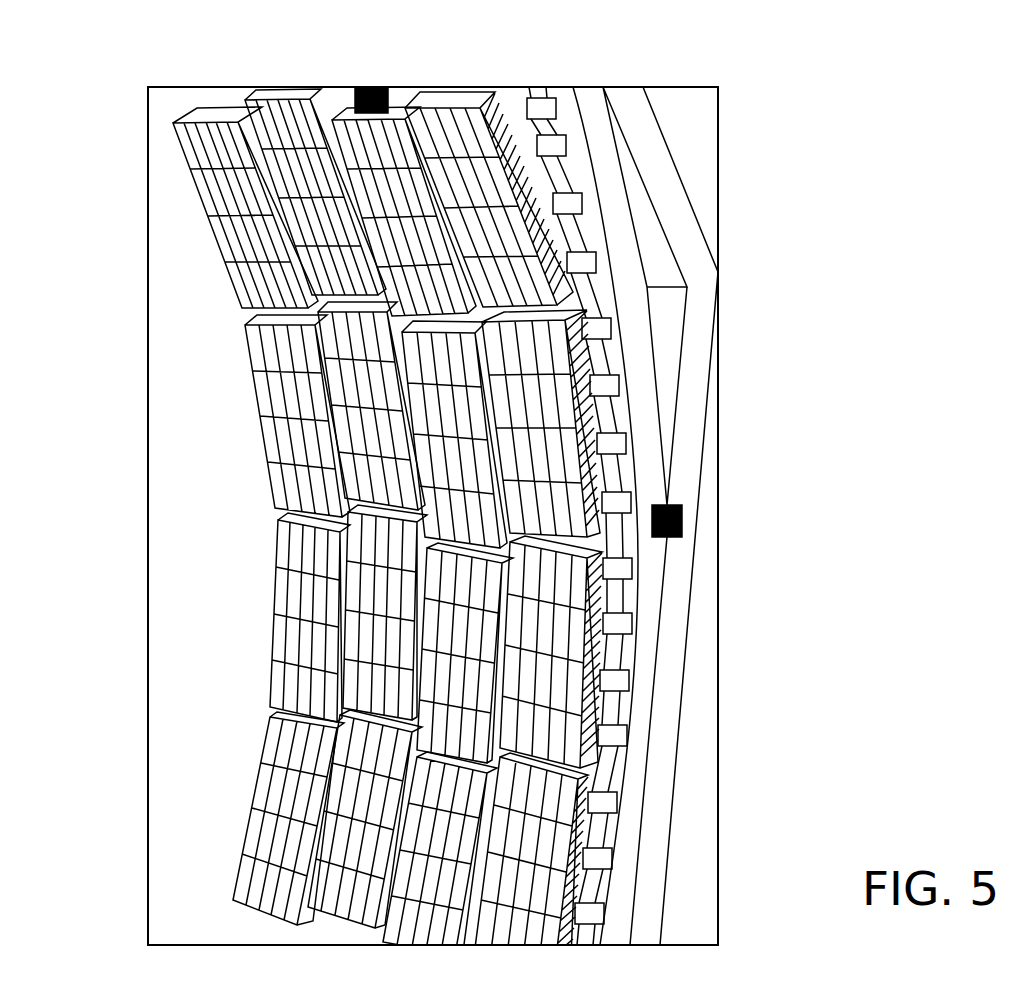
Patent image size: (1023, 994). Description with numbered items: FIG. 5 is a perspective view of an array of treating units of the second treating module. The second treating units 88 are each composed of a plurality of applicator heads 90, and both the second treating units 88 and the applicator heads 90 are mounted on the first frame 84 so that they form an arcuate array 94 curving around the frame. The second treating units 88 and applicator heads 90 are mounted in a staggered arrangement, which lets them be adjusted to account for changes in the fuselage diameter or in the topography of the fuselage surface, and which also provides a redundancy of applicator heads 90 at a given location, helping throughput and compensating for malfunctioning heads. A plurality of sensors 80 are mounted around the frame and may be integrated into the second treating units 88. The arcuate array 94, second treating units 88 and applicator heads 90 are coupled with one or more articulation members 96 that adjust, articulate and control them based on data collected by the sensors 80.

The sensor 80 is at (369, 88).
The first frame 84 is at (598, 140).
The second treating unit 88 is at (540, 223).
The applicator head 90 is at (590, 765).
The arcuate array 94 is at (665, 771).
The articulation member 96 is at (593, 860).